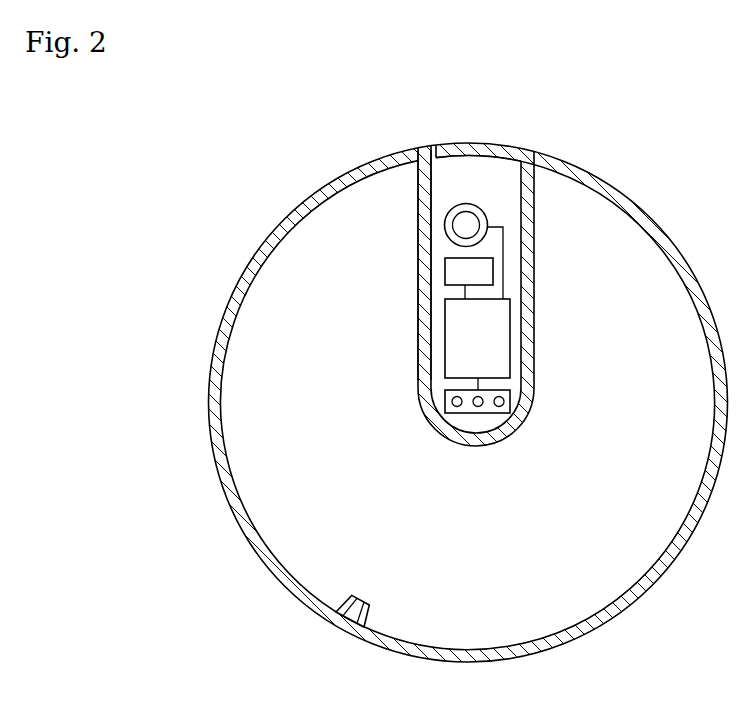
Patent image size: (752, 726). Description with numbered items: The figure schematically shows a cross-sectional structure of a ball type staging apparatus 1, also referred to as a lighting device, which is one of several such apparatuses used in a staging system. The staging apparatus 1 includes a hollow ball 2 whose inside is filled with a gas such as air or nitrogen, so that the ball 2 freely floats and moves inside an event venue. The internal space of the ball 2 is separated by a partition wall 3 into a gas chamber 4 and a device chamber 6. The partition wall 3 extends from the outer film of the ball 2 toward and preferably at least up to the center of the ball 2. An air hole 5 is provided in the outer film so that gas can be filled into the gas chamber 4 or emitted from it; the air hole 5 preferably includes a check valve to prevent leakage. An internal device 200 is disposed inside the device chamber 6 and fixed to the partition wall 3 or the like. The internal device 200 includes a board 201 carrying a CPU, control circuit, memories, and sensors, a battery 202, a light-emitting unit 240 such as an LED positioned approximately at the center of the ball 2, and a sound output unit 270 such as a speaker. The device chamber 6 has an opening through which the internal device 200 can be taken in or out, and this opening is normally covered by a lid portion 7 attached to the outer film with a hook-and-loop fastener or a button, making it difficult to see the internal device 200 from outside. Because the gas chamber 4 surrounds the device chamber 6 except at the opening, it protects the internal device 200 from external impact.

The staging apparatus 1 is at (266, 182).
The ball 2 is at (231, 257).
The partition wall 3 is at (426, 250).
The gas chamber 4 is at (243, 442).
The air hole 5 is at (338, 627).
The device chamber 6 is at (512, 187).
The lid portion 7 is at (478, 146).
The internal device 200 is at (538, 378).
The board 201 is at (498, 328).
The battery 202 is at (484, 275).
The light-emitting unit 240 is at (487, 414).
The sound output unit 270 is at (490, 208).